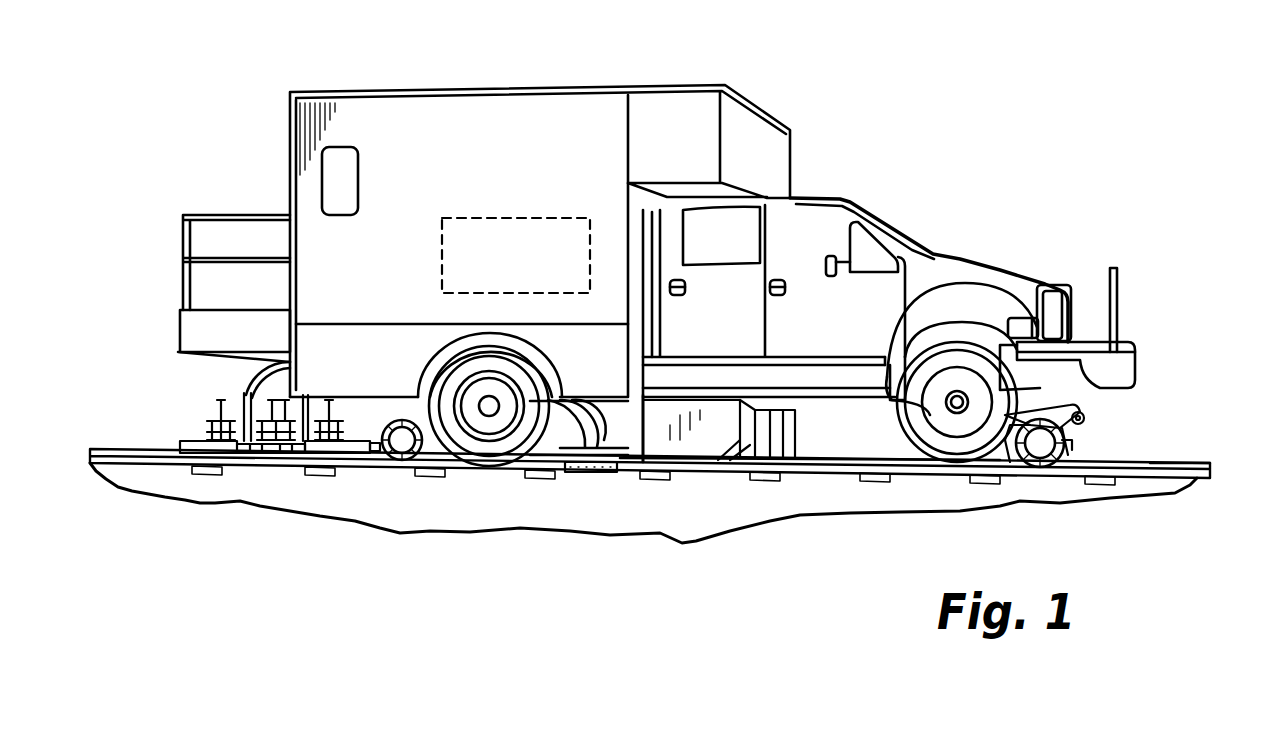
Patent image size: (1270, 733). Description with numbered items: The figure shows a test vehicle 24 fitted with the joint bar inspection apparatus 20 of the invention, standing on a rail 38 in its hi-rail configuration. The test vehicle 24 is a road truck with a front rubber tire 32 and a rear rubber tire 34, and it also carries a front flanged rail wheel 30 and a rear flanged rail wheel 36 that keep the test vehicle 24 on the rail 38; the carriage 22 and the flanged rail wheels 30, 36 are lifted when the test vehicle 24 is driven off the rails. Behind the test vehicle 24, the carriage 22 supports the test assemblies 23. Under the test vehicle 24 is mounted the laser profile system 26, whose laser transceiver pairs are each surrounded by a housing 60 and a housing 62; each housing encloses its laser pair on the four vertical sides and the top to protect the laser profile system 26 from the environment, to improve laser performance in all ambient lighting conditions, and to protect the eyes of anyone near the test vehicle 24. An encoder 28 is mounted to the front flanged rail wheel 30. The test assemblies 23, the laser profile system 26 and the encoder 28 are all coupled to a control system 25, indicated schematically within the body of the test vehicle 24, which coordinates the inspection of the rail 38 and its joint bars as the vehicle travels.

The joint bar inspection apparatus 20 is at (416, 627).
The carriage 22 is at (265, 487).
The test assemblies 23 is at (186, 398).
The test vehicle 24 is at (880, 106).
The control system 25 is at (480, 218).
The laser profile system 26 is at (725, 497).
The encoder 28 is at (1082, 415).
The front flanged rail wheel 30 is at (1040, 468).
The front rubber tire 32 is at (936, 440).
The rear rubber tire 34 is at (491, 450).
The rear flanged rail wheel 36 is at (400, 452).
The rail 38 is at (1178, 463).
The housing 60 is at (790, 438).
The housing 62 is at (663, 440).